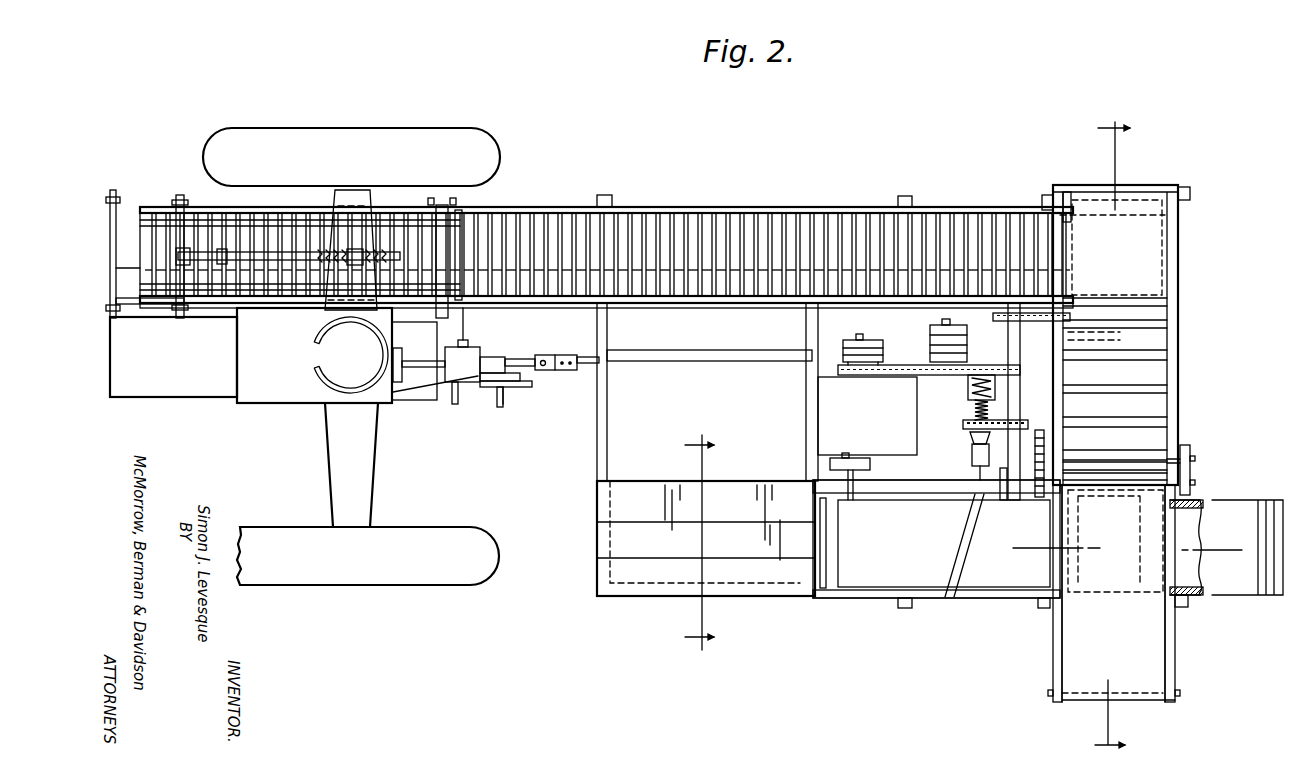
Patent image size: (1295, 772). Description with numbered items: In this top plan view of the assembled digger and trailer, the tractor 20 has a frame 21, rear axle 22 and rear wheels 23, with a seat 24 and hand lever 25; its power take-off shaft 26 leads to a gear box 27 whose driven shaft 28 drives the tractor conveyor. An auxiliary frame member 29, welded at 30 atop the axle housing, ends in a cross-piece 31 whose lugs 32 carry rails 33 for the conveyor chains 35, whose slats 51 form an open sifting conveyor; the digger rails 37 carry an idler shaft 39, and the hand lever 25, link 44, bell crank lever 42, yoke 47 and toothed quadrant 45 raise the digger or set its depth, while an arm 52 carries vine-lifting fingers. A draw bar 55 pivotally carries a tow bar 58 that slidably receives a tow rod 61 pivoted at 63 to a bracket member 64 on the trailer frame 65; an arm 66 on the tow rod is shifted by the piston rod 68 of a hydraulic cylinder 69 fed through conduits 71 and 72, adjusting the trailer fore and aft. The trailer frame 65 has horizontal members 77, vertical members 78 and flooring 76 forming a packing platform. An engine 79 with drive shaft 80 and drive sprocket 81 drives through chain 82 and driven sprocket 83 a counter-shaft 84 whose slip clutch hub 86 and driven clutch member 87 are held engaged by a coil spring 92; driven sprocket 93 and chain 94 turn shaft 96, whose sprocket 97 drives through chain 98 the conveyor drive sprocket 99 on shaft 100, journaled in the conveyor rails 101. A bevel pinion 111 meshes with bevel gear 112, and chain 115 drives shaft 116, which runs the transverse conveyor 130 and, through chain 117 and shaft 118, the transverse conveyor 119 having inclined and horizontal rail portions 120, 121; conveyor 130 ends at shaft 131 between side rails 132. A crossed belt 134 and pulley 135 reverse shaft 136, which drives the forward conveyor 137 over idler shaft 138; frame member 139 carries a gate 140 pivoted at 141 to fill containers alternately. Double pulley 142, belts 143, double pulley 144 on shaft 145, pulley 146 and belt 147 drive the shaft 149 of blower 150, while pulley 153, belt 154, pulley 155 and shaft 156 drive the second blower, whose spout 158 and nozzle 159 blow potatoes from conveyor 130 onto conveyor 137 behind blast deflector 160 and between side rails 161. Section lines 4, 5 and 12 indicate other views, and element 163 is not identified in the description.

The section line 4- 4 is at (1112, 435).
The section line 5- 5 is at (1126, 549).
The section line 12- 12 is at (699, 544).
The tractor 20 is at (284, 406).
The tractor frame 21 is at (192, 398).
The rear axle 22 is at (365, 478).
The rear wheels 23 is at (325, 138).
The seat 24 is at (313, 355).
The hand lever 25 is at (351, 250).
The power take-off shaft 26 is at (400, 365).
The gear box 27 is at (462, 364).
The driven shaft 28 is at (468, 330).
The auxiliary frame member 29 is at (396, 232).
The weld 30 is at (124, 212).
The cross-piece 31 is at (440, 235).
The depending lugs 32 is at (432, 198).
The rail 33 is at (272, 210).
The conveyor chains 35 is at (238, 213).
The digger rail 37 is at (186, 210).
The idler shaft 39 is at (156, 306).
The bell crank lever 42 is at (198, 252).
The link 44 is at (262, 258).
The toothed quadrant 45 is at (355, 250).
The yoke 47 is at (178, 210).
The conveyor slats 51 is at (292, 224).
The rod or arm 52 is at (130, 236).
The draw bar 55 is at (428, 398).
The tow bar 58 is at (496, 357).
The tow rod 61 is at (528, 356).
The pivot 63 is at (546, 355).
The bracket member 64 is at (582, 357).
The trailer frame 65 is at (594, 426).
The laterally-extending arm 66 is at (535, 373).
The piston rod 68 is at (530, 376).
The hydraulic cylinder 69 is at (498, 392).
The conduit 71 is at (455, 406).
The conduit 72 is at (510, 392).
The flooring 76 is at (638, 585).
The horizontal frame members 77 is at (613, 392).
The vertical frame members 78 is at (905, 196).
The power unit 79 is at (808, 419).
The drive shaft 80 is at (848, 341).
The drive sprocket 81 is at (832, 370).
The endless chain 82 is at (867, 416).
The driven sprocket 83 is at (995, 372).
The counter-shaft 84 is at (1000, 352).
The clutch hub 86 is at (997, 382).
The driven clutch member 87 is at (992, 400).
The coil spring 92 is at (970, 412).
The driven sprocket 93 is at (968, 434).
The chain 94 is at (1005, 421).
The shaft 96 is at (1063, 412).
The sprocket 97 is at (982, 300).
The chain 98 is at (1065, 340).
The conveyor drive sprocket 99 is at (1070, 318).
The shaft 100 is at (1053, 205).
The conveyor rails 101 is at (660, 207).
The bevel pinion 111 is at (1035, 443).
The bevel gear 112 is at (968, 448).
The chain 115 is at (1065, 437).
The shaft 116 is at (1196, 484).
The chain 117 is at (1195, 475).
The second transverse shaft 118 is at (1192, 460).
The transverse conveyor 119 is at (1155, 370).
The inclined side rail portion 120 is at (1178, 250).
The horizontal side rail portion 121 is at (1178, 418).
The transverse conveyor 130 is at (1148, 668).
The shaft 131 is at (1046, 694).
The side rails 132 is at (1052, 668).
The crossed belt 134 is at (895, 500).
The pulley 135 is at (845, 456).
The transverse shaft 136 is at (840, 470).
The conveyor belt 137 is at (875, 590).
The transverse idler shaft 138 is at (1040, 610).
The frame member 139 is at (830, 572).
The gate 140 is at (820, 528).
The pivot 141 is at (818, 550).
The double pulley 142 is at (845, 355).
The belts 143 is at (897, 368).
The second double pulley 144 is at (932, 350).
The transverse shaft 145 is at (908, 366).
The pulley 146 is at (933, 300).
The belt 147 is at (993, 318).
The blower shaft 149 is at (1115, 300).
The rotary upstanding blower 150 is at (1130, 210).
The pulley 153 is at (952, 500).
The belt 154 is at (1008, 505).
The pulley 155 is at (1115, 541).
The blower shaft 156 is at (1109, 541).
The spout 158 is at (1275, 598).
The nozzle 159 is at (1185, 566).
The blast deflector 160 is at (955, 566).
The side rails 161 is at (818, 492).
The post 163 is at (1082, 183).